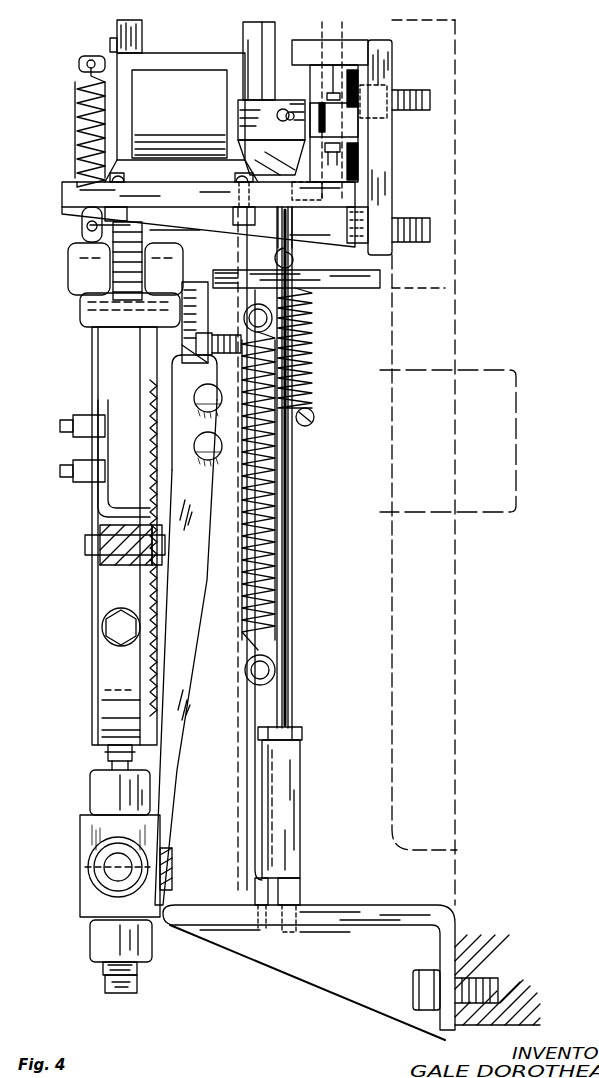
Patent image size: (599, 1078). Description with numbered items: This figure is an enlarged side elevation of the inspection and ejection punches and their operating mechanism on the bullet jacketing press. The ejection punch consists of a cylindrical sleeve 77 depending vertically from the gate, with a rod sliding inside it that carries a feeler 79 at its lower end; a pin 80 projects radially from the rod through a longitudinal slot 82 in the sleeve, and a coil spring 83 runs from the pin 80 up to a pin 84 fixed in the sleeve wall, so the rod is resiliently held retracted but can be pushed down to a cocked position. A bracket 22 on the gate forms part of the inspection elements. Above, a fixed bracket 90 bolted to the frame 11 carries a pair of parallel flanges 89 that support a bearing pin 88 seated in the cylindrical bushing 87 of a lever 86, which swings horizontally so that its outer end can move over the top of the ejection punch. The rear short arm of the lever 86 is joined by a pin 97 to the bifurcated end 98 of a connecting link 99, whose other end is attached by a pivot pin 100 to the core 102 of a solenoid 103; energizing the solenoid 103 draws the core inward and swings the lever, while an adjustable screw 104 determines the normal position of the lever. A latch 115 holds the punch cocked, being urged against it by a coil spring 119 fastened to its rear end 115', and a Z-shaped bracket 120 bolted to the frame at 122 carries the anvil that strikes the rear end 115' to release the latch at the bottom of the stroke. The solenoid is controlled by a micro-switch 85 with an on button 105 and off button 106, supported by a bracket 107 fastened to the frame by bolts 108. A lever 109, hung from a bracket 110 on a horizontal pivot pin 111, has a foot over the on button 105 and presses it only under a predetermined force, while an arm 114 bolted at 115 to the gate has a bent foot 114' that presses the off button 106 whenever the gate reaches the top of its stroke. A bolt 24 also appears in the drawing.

The solenoid 103 is at (178, 82).
The lever 86 is at (252, 128).
The solenoid core 102 is at (262, 48).
The pin 97 is at (330, 92).
The bearing pin 88 is at (334, 104).
The flanges 89 is at (356, 48).
The pivot pin 100 is at (284, 110).
The connecting link 99 is at (252, 134).
The bifurcated end 98 is at (320, 130).
The adjustable screw 104 is at (380, 126).
The cylindrical bushing 87 is at (347, 152).
The bracket 90 is at (382, 172).
The rear end of the latch 115' is at (251, 237).
The bracket 22 is at (203, 300).
The pivot bolt 24 is at (222, 338).
The pin 84 is at (300, 321).
The coil spring 119 is at (307, 355).
The latch 115 is at (191, 425).
The bracket 110 is at (92, 515).
The pivot pin 111 is at (110, 548).
The lever 109 is at (108, 668).
The arm 114 is at (193, 630).
The coil spring 83 is at (272, 556).
The cylindrical sleeve 77 is at (290, 588).
The pin 80 is at (268, 680).
The longitudinal slot 82 is at (264, 706).
The on button 105 is at (108, 756).
The switch 85 is at (70, 842).
The Z-shaped bracket 120 is at (290, 826).
The feeler 79 is at (262, 894).
The bolt 122 is at (296, 890).
The bracket 107 is at (418, 945).
The off button 106 is at (104, 969).
The foot 114' is at (148, 980).
The bolts 108 is at (416, 996).
The frame 11 is at (532, 1024).